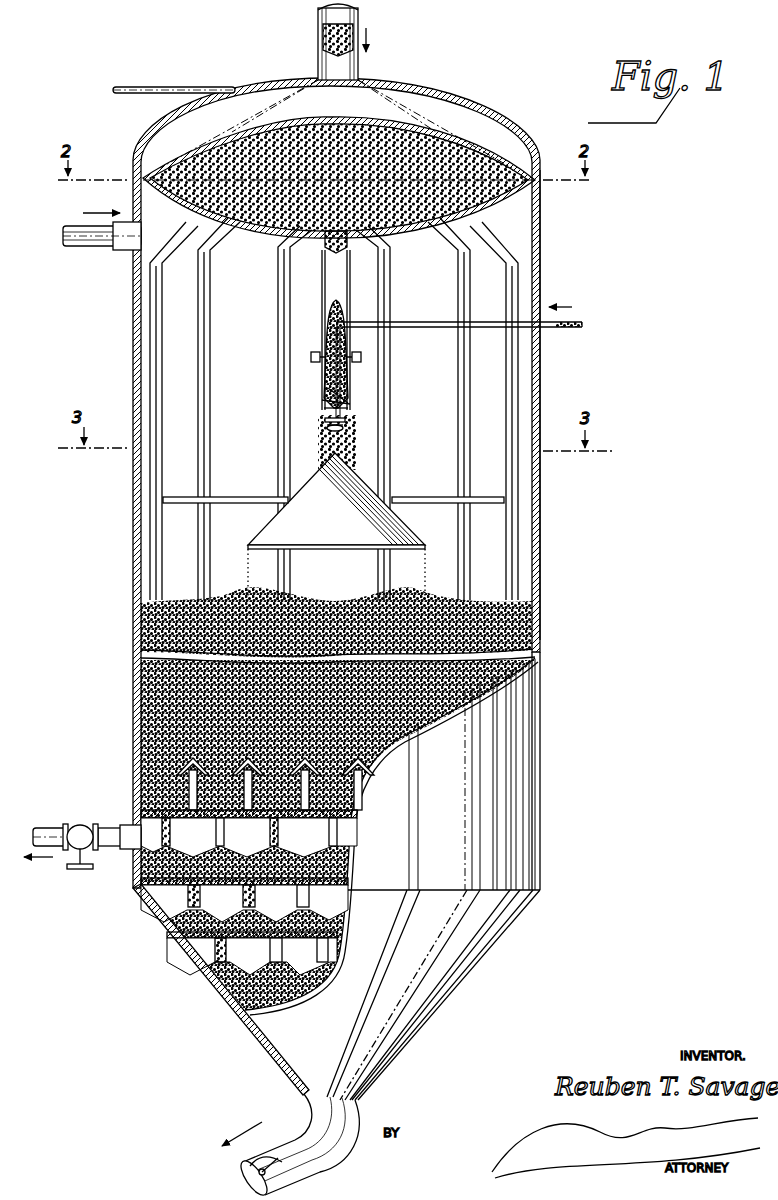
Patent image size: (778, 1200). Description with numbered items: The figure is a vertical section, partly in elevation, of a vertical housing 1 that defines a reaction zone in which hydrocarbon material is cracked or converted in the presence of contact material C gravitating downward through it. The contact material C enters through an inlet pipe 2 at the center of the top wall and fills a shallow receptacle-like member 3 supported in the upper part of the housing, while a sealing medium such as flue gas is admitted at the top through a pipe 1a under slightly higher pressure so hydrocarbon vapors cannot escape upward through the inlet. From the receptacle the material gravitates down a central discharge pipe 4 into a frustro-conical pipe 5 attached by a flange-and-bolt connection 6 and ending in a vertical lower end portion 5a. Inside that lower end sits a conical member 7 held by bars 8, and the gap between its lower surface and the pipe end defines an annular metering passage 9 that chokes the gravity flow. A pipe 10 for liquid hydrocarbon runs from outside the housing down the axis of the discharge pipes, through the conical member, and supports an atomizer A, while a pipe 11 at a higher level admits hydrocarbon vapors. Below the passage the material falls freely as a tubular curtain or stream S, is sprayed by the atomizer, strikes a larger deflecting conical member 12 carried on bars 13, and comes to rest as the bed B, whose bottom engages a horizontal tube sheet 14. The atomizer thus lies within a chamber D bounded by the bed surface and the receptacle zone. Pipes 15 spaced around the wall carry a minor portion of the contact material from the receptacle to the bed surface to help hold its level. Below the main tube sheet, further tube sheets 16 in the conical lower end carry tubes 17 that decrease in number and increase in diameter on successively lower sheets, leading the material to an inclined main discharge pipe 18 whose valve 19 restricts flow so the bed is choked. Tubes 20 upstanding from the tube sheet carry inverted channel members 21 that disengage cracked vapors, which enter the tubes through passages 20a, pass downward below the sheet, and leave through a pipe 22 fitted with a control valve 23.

The vertical housing 1 is at (540, 508).
The pipe 1a is at (208, 87).
The inlet pipe 2 is at (330, 36).
The receptacle-like member 3 is at (505, 204).
The central discharge pipe 4 is at (352, 290).
The frustro-conical pipe 5 is at (325, 385).
The vertical lower end portion 5a is at (350, 410).
The flange-and-bolt connection 6 is at (351, 360).
The conical member 7 is at (347, 395).
The bars 8 is at (352, 400).
The annular metering passage 9 is at (346, 419).
The pipe 10 is at (566, 328).
The pipe 11 is at (100, 248).
The conical member 12 is at (358, 488).
The bars 13 is at (254, 497).
The tube sheet 14 is at (141, 812).
The pipes 15 is at (281, 298).
The tube sheets 16 is at (146, 902).
The tubes 17 is at (176, 822).
The main discharge pipe 18 is at (296, 1118).
The valve 19 is at (318, 1160).
The tubes 20 is at (188, 783).
The passages 20a is at (360, 775).
The channel members 21 is at (183, 764).
The pipe 22 is at (90, 824).
The control valve 23 is at (52, 830).
The atomizer A is at (345, 430).
The bed B is at (163, 628).
The contact material C is at (170, 186).
The chamber D is at (487, 390).
The curtain or stream S is at (314, 456).